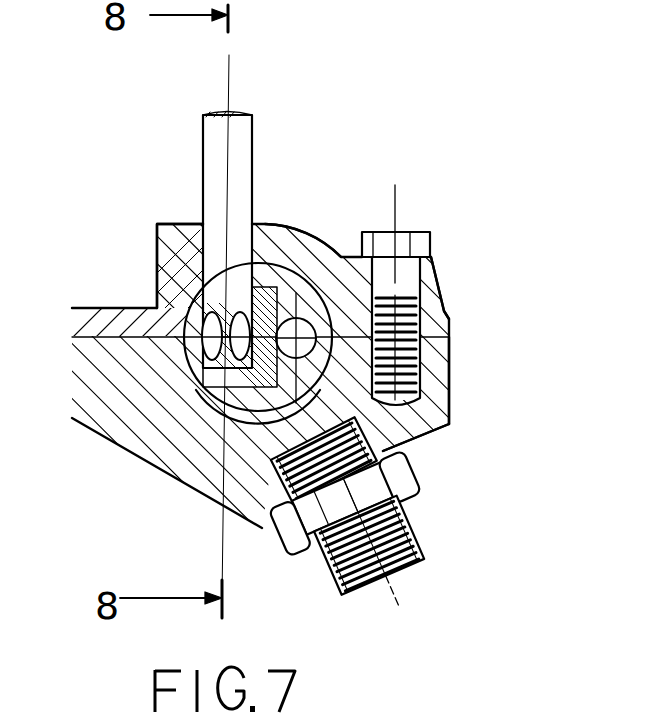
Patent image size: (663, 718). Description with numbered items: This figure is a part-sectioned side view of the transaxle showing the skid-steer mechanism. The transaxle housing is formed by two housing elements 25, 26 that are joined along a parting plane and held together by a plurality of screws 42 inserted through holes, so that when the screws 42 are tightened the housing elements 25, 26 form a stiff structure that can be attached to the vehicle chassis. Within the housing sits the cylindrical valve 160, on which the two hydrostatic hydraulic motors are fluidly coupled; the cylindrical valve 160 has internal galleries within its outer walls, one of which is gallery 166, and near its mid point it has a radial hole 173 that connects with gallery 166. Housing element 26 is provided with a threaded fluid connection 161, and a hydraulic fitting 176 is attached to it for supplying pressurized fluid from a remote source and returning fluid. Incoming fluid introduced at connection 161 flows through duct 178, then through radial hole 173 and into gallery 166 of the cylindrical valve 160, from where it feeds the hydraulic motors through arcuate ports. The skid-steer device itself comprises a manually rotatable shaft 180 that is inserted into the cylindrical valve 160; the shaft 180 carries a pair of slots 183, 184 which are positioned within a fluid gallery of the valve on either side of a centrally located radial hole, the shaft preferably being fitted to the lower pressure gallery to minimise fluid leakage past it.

The manually rotatable shaft 180 is at (233, 147).
The cylindrical valve 160 is at (270, 226).
The internal gallery 166 is at (300, 318).
The screw 42 is at (407, 248).
The housing element 25 is at (427, 325).
The housing element 26 is at (432, 362).
The fluid connection 161 is at (395, 430).
The hydraulic fitting 176 is at (420, 528).
The duct 178 is at (262, 412).
The radial hole 173 is at (265, 367).
The slot 183 is at (198, 316).
The slot 184 is at (160, 242).